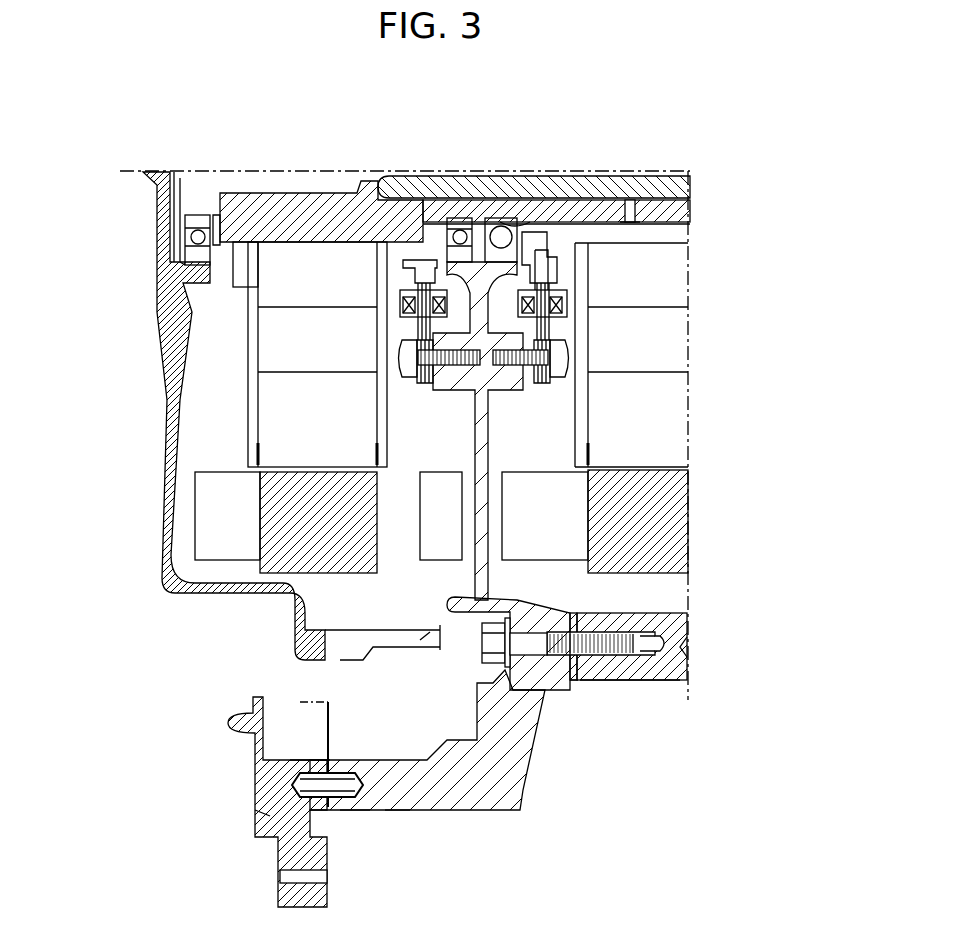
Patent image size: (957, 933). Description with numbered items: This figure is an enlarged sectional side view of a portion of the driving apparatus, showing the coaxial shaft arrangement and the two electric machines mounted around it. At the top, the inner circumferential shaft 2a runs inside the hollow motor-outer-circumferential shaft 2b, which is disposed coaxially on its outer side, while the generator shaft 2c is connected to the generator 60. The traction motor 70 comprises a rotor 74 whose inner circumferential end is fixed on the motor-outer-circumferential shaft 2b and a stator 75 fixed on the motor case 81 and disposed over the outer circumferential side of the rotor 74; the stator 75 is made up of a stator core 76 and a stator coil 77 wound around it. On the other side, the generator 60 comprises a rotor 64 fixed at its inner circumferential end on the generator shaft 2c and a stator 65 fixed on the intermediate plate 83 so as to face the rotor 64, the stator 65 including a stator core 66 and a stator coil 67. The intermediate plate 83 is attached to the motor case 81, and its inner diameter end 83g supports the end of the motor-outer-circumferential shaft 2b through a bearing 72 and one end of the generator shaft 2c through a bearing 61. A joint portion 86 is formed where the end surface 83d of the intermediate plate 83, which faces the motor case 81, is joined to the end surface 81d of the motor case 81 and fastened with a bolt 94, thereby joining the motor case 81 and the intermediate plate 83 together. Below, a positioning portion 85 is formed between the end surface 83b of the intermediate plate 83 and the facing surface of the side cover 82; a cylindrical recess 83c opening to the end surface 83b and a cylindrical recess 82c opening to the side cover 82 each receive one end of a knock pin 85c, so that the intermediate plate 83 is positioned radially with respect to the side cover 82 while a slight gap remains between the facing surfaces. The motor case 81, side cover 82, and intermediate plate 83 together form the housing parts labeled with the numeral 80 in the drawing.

The inner circumferential shaft 2a is at (297, 212).
The motor-outer-circumferential shaft 2b is at (600, 212).
The generator shaft 2c is at (666, 186).
The generator motor 60 is at (177, 539).
The bearing 61 is at (420, 245).
The rotor 64 is at (283, 353).
The stator 65 is at (258, 522).
The stator core 66 is at (277, 543).
The stator coil 67 is at (220, 505).
The traction motor 70 is at (651, 428).
The bearing 72 is at (548, 262).
The rotor 74 is at (642, 350).
The stator 75 is at (651, 521).
The stator core 76 is at (648, 580).
The stator coil 77 is at (563, 503).
The bracket assembly 80 is at (368, 543).
The motor case 81 is at (617, 697).
The end surface 81d is at (657, 682).
The side cover 82 is at (162, 484).
The cylindrical recess 82c is at (303, 790).
The intermediate plate 83 is at (448, 763).
The end surface 83b is at (300, 770).
The cylindrical recess 83c is at (353, 802).
The end surface 83d is at (397, 803).
The inner diameter end 83g is at (507, 277).
The positioning portion 85 is at (328, 812).
The knock pin 85c is at (267, 813).
The joint portion 86 is at (573, 683).
The bolt 94 is at (497, 665).